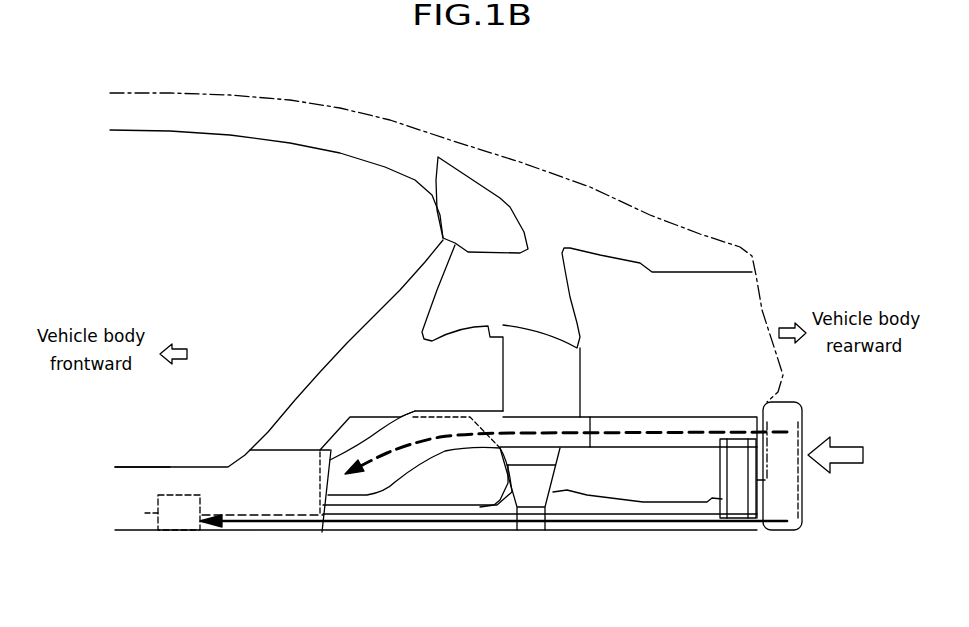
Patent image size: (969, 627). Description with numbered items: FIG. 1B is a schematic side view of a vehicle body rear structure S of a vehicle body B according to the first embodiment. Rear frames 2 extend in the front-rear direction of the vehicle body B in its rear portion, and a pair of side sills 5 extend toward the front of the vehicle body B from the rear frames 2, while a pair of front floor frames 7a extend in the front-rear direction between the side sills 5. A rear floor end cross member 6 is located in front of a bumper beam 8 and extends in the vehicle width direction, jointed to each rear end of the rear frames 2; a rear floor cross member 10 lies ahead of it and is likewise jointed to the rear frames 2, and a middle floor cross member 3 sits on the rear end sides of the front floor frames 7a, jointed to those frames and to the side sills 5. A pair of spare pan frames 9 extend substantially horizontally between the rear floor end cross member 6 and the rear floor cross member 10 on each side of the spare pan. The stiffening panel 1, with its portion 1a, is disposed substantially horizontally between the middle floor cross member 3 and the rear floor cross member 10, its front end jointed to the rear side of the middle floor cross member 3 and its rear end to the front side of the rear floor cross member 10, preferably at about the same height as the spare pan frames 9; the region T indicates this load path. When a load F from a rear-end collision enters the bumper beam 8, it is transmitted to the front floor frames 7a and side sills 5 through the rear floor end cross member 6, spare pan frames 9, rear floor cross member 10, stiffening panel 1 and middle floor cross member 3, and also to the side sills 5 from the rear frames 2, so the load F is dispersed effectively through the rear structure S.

The vehicle body B is at (334, 107).
The vehicle body rear structure S is at (667, 328).
The air intake tray/passage T is at (363, 423).
The rear frames 2 is at (688, 425).
The stiffening panel 1 is at (493, 555).
The under cover plate portion 1a is at (395, 532).
The middle floor cross member 3 is at (181, 498).
The side sills 5 is at (138, 483).
The front floor frames 7a is at (145, 513).
The rear floor cross member 10 is at (532, 480).
The spare pan frames 9 is at (643, 498).
The rear floor end cross member 6 is at (735, 492).
The bumper beam 8 is at (802, 488).
The load F is at (847, 455).